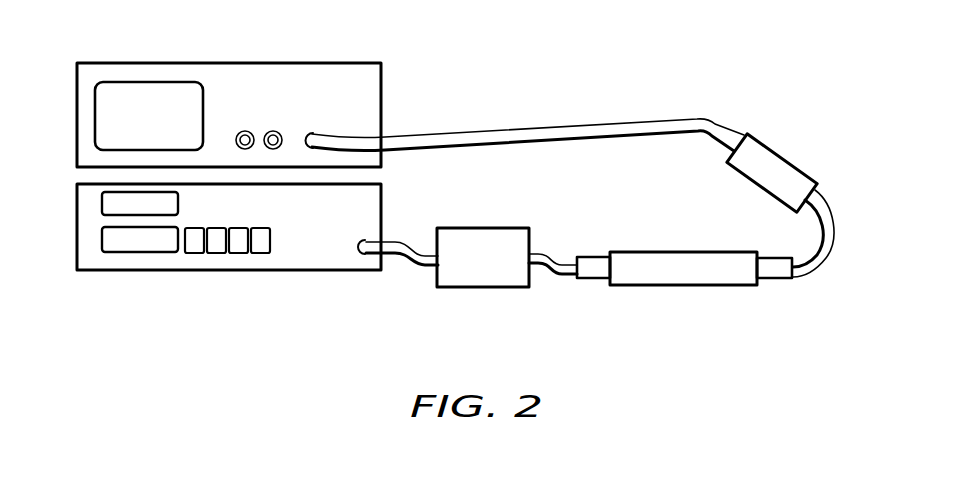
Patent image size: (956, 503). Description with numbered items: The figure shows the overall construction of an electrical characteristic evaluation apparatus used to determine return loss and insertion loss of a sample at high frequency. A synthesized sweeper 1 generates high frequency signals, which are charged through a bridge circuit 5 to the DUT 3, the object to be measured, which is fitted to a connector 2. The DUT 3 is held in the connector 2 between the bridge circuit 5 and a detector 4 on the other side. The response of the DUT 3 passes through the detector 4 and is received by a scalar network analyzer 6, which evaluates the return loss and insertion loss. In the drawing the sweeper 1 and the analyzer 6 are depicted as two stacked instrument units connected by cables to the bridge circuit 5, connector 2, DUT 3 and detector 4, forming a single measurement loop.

The synthesized sweeper 1 is at (280, 272).
The connector 2 is at (600, 279).
The DUT 3 is at (678, 287).
The detector 4 is at (780, 153).
The bridge circuit 5 is at (470, 288).
The scalar network analyzer 6 is at (330, 78).